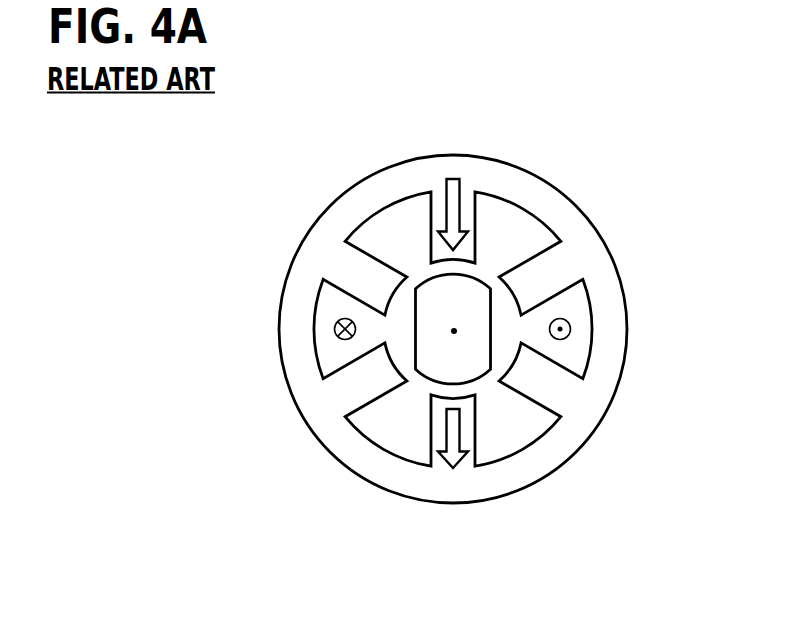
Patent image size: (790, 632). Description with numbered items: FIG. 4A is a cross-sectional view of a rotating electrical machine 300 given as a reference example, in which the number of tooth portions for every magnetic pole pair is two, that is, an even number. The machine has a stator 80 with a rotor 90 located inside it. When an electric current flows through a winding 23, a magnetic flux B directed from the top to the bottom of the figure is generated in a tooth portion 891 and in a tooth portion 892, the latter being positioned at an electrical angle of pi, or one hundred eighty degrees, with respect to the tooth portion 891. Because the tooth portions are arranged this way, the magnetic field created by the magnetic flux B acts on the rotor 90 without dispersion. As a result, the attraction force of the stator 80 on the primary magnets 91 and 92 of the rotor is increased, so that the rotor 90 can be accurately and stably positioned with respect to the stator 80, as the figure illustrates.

The rotating electrical machine 300 is at (355, 175).
The stator 80 is at (612, 240).
The winding 23 is at (334, 329).
The tooth portion 891 is at (466, 207).
The tooth portion 892 is at (468, 447).
The magnetic flux B is at (460, 220).
The rotor 90 is at (498, 362).
The primary magnet 91 is at (467, 284).
The primary magnet 92 is at (493, 383).